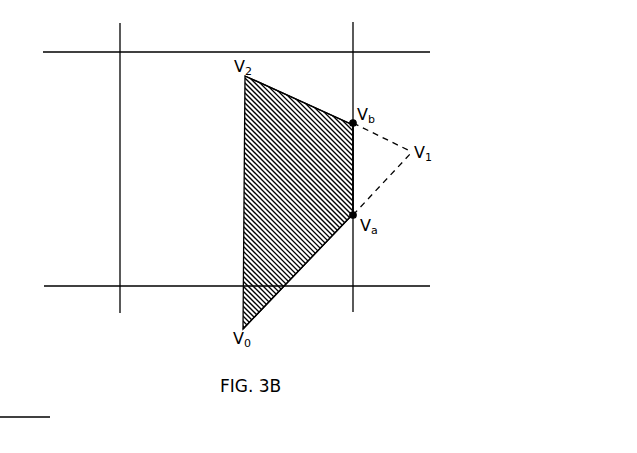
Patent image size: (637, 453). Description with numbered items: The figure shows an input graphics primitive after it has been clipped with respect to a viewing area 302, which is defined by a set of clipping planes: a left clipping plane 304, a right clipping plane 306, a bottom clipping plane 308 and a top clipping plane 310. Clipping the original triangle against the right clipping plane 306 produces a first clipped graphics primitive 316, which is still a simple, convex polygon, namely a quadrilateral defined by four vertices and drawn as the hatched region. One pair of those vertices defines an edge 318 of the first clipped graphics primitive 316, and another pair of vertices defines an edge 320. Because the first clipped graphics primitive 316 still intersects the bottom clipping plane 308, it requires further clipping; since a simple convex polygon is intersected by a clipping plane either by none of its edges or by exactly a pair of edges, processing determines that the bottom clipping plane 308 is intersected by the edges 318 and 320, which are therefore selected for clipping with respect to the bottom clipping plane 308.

The viewing area 302 is at (318, 73).
The left clipping plane 304 is at (120, 270).
The right clipping plane 306 is at (355, 273).
The bottom clipping plane 308 is at (148, 286).
The top clipping plane 310 is at (147, 52).
The first clipped graphics primitive 316 is at (307, 267).
The edge 318 is at (322, 249).
The edge 320 is at (241, 203).